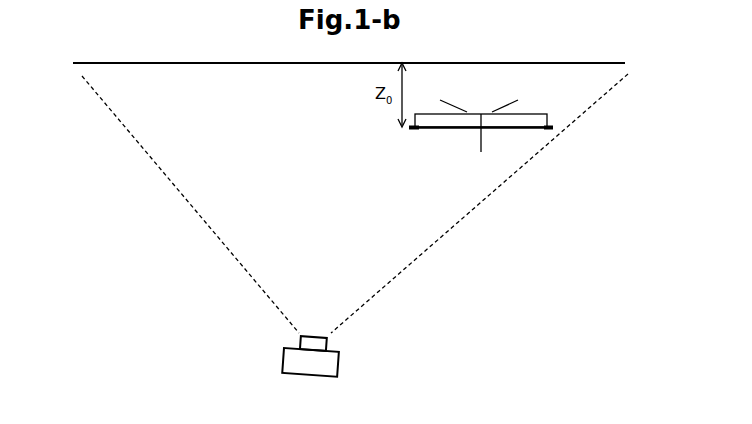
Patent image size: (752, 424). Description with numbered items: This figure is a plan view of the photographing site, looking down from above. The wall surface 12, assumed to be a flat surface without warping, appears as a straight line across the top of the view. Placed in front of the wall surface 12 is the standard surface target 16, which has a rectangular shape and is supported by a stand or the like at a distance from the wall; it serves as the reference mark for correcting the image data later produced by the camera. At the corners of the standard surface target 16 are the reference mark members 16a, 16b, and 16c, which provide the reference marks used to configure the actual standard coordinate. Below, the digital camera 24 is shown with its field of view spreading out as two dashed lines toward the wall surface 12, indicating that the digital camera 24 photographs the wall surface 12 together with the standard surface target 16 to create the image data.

The wall surface 12 is at (200, 66).
The standard surface target 16 is at (481, 114).
The reference mark member 16a is at (410, 128).
The reference mark member 16b is at (547, 129).
The reference mark member 16c is at (416, 130).
The digital camera 24 is at (338, 350).